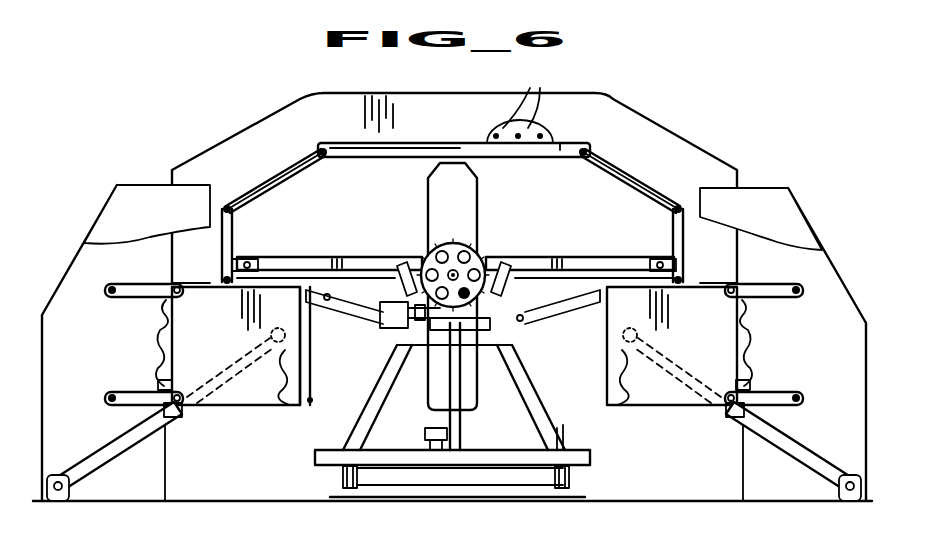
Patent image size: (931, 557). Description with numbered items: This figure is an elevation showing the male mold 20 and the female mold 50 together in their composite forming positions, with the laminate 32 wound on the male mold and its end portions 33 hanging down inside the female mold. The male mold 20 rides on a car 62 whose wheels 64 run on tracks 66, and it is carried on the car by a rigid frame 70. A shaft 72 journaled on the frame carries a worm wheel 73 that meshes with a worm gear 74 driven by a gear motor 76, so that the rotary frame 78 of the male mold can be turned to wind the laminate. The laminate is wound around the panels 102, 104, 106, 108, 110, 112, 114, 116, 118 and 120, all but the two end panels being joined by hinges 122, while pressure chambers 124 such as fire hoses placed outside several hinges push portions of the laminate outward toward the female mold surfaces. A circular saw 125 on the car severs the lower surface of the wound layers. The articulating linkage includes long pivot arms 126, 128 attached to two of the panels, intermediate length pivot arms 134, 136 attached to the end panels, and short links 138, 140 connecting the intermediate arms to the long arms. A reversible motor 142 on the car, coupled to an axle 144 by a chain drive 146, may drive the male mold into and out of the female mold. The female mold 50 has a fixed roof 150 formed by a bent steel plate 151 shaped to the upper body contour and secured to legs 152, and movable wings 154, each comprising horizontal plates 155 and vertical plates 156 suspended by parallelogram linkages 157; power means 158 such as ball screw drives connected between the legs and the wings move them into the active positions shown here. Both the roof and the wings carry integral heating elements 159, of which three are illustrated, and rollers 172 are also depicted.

The male mold 20 is at (616, 160).
The laminate 32 is at (345, 128).
The end portions 33 is at (306, 398).
The female mold 50 is at (200, 92).
The car 62 is at (315, 452).
The wheels 64 is at (343, 470).
The tracks 66 is at (343, 487).
The rigid frame 70 is at (525, 372).
The shaft 72 is at (453, 268).
The worm wheel 73 is at (428, 257).
The worm gear 74 is at (448, 314).
The gear motor 76 is at (378, 326).
The rotary frame 78 is at (484, 186).
The panel 102 is at (310, 380).
The panel 104 is at (236, 346).
The panel 106 is at (222, 252).
The panel 108 is at (272, 183).
The panel 110 is at (427, 112).
The panel 112 is at (562, 145).
The panel 114 is at (635, 182).
The panel 116 is at (673, 222).
The panel 118 is at (660, 290).
The panel 120 is at (600, 388).
The hinges 122 is at (324, 160).
The pressure chambers 124 is at (320, 152).
The circular saw 125 is at (445, 430).
The long pivot arm 126 is at (328, 257).
The long pivot arm 128 is at (505, 257).
The intermediate length pivot arm 134 is at (316, 305).
The intermediate length pivot arm 136 is at (566, 310).
The short link 138 is at (402, 287).
The short link 140 is at (497, 290).
The reversible motor 142 is at (563, 428).
The axle 144 is at (378, 500).
The chain drive 146 is at (522, 498).
The roof 150 is at (622, 88).
The bent steel plate 151 is at (503, 128).
The legs 152 is at (85, 258).
The wings 154 is at (226, 356).
The horizontal plates 155 is at (280, 277).
The vertical plates 156 is at (288, 368).
The parallelogram linkages 157 is at (118, 390).
The power means 158 is at (118, 433).
The heating elements 159 is at (279, 418).
The roller 172 is at (167, 312).